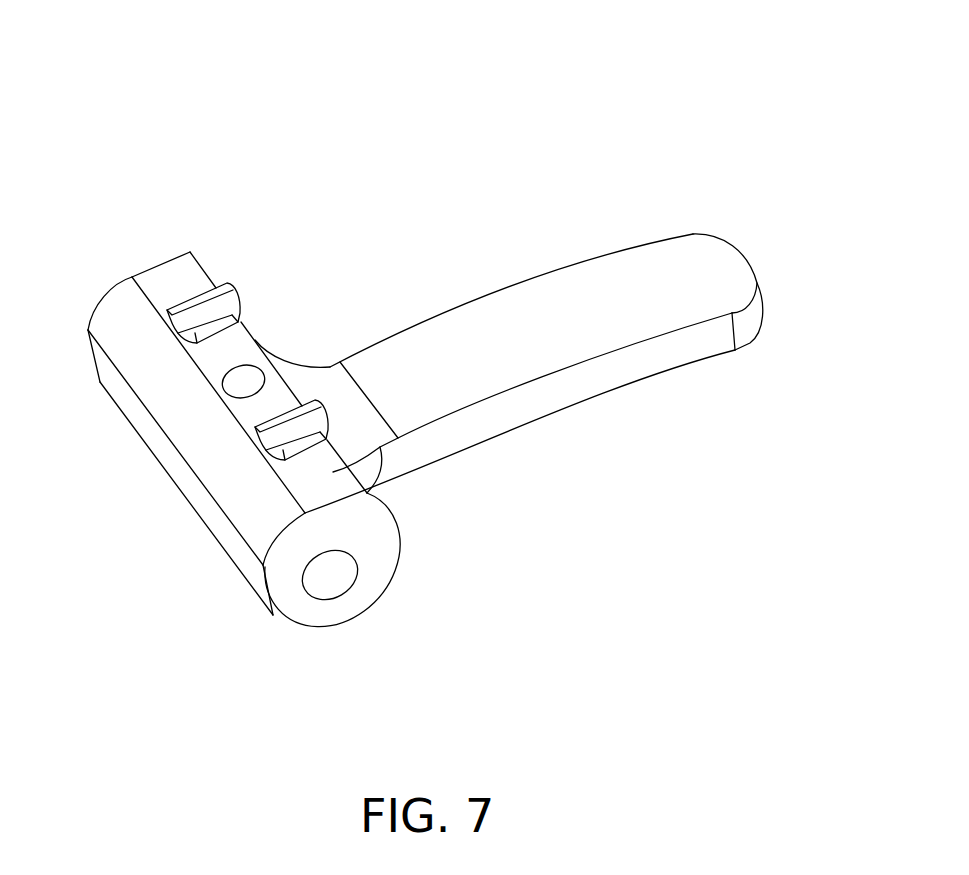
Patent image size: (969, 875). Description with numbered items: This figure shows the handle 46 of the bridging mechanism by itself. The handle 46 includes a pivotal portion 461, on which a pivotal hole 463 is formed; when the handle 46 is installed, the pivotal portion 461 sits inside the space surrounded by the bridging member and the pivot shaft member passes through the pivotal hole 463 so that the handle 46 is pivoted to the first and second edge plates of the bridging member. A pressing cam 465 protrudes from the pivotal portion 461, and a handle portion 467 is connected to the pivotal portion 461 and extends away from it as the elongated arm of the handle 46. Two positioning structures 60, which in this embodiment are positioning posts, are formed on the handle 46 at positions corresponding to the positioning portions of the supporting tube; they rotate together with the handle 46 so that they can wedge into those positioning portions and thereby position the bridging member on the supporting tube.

The handle 46 is at (473, 97).
The pivotal portion 461 is at (373, 562).
The pivotal hole 463 is at (330, 582).
The pressing cam 465 is at (302, 487).
The handle portion 467 is at (592, 278).
The positioning structure 60 is at (223, 308).